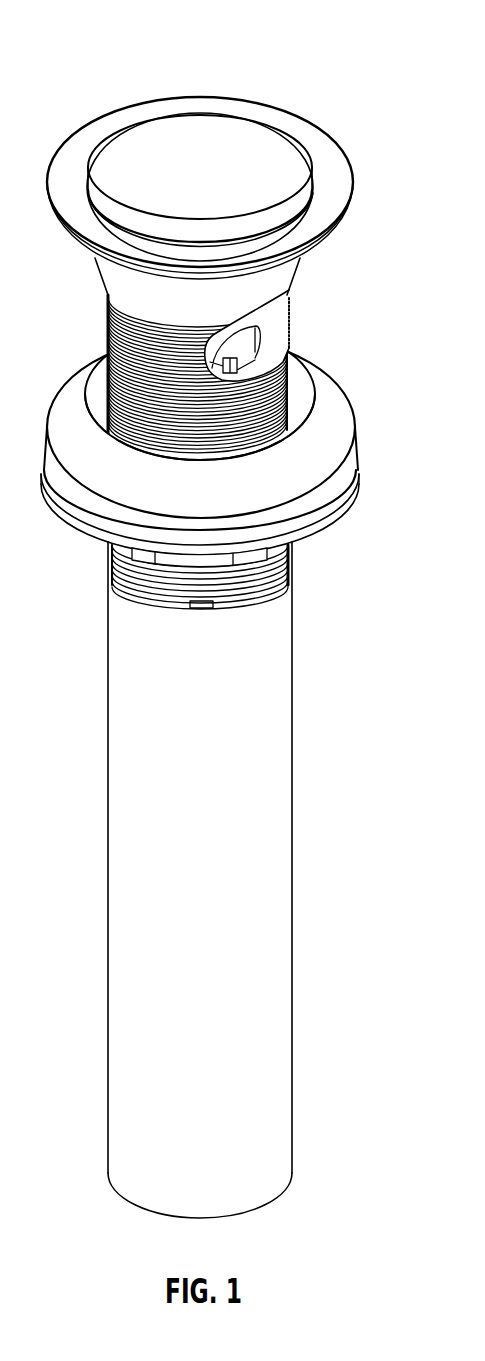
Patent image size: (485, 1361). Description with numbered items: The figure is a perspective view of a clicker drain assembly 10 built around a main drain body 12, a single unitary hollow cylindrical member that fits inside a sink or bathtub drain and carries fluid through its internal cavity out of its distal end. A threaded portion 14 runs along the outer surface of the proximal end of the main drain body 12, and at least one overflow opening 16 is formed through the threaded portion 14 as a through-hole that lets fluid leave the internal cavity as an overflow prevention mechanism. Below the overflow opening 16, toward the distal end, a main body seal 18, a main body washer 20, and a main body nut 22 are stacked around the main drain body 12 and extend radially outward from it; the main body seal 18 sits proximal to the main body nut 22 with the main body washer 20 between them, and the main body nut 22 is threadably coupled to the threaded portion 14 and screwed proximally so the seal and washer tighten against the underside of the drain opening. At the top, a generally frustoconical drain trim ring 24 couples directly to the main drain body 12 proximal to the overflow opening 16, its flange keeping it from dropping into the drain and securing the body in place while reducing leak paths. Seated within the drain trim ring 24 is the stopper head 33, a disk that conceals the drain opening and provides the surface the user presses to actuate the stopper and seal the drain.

The drain assembly 10 is at (385, 45).
The main drain body 12 is at (270, 777).
The threaded portion 14 is at (110, 338).
The overflow opening 16 is at (270, 325).
The main body seal 18 is at (342, 427).
The main body washer 20 is at (340, 488).
The main body nut 22 is at (285, 572).
The drain trim ring 24 is at (336, 246).
The stopper head 33 is at (257, 165).